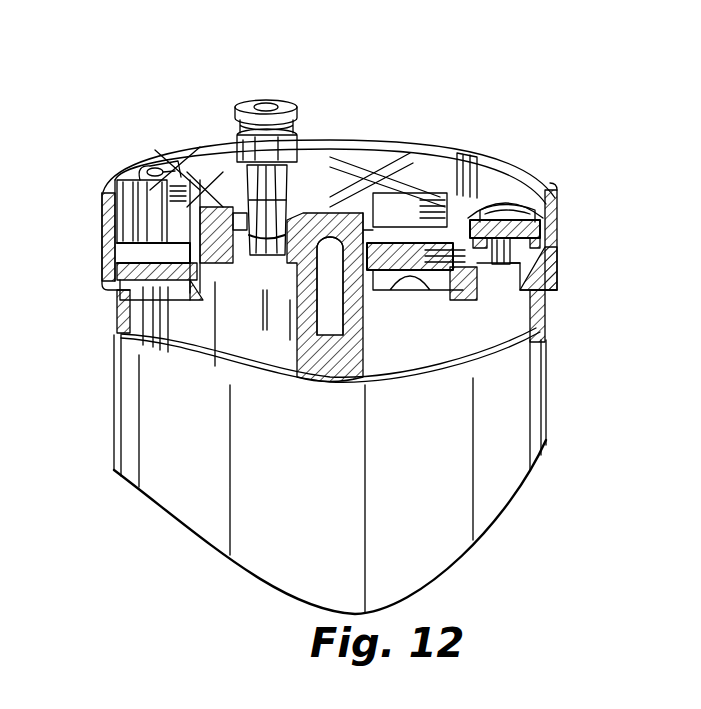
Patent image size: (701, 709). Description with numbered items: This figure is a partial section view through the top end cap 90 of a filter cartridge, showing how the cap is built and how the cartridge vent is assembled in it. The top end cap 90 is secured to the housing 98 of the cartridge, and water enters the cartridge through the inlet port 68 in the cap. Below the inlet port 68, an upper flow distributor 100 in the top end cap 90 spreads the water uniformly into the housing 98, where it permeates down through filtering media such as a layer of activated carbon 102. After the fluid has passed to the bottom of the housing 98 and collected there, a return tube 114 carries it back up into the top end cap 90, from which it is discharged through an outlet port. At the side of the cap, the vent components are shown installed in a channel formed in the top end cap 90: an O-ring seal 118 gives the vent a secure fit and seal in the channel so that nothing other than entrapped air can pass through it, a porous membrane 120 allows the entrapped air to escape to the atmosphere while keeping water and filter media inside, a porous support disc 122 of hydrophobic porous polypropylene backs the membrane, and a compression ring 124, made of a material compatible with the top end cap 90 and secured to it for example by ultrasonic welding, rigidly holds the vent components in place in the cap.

The inlet port 68 is at (247, 152).
The top end cap 90 is at (468, 158).
The housing 98 is at (136, 400).
The upper flow distributor 100 is at (310, 363).
The activated carbon 102 is at (113, 235).
The return tube 114 is at (240, 360).
The O-ring seal 118 is at (548, 255).
The porous membrane 120 is at (508, 266).
The porous support disc 122 is at (542, 232).
The compression ring 124 is at (540, 202).